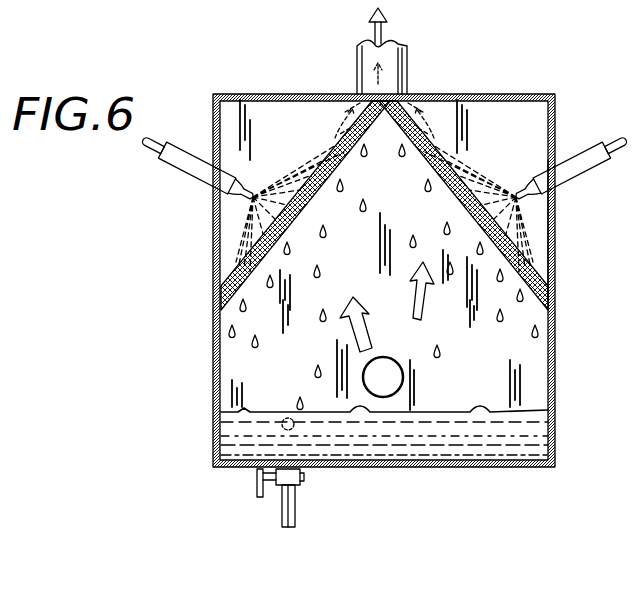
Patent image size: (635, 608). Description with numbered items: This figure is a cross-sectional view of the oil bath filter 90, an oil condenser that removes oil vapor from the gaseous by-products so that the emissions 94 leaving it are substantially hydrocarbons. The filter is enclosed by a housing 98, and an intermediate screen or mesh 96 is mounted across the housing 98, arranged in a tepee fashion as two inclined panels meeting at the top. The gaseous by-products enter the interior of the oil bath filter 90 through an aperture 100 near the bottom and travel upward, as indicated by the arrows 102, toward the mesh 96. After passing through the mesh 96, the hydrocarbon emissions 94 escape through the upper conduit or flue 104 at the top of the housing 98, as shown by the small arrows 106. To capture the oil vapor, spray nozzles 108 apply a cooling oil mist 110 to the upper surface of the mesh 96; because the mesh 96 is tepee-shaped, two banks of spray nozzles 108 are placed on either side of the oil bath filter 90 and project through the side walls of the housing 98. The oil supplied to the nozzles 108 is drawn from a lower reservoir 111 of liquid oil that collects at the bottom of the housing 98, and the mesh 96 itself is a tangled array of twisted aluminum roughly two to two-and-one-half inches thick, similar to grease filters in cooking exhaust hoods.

The oil bath filter 90 is at (162, 364).
The emissions 94 is at (386, 14).
The mesh 96 is at (213, 260).
The housing 98 is at (556, 233).
The aperture 100 is at (396, 356).
The arrows 102 is at (347, 325).
The flue 104 is at (357, 59).
The small arrows 106 is at (432, 110).
The spray nozzles 108 is at (574, 150).
The cooling oil mist 110 is at (481, 172).
The lower reservoir 111 is at (522, 428).